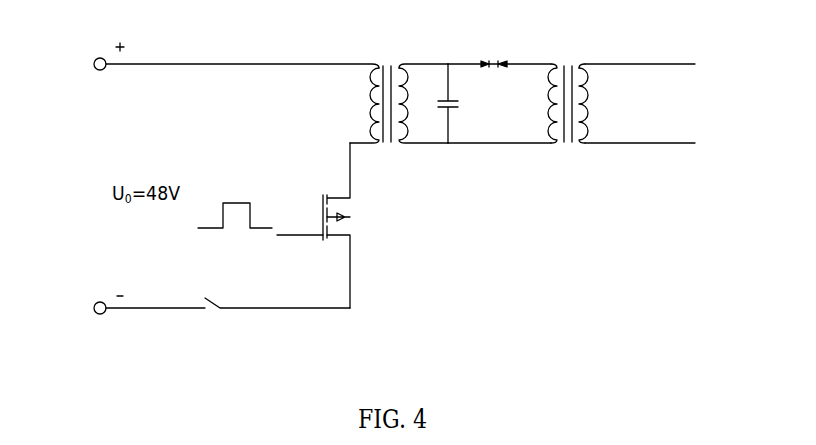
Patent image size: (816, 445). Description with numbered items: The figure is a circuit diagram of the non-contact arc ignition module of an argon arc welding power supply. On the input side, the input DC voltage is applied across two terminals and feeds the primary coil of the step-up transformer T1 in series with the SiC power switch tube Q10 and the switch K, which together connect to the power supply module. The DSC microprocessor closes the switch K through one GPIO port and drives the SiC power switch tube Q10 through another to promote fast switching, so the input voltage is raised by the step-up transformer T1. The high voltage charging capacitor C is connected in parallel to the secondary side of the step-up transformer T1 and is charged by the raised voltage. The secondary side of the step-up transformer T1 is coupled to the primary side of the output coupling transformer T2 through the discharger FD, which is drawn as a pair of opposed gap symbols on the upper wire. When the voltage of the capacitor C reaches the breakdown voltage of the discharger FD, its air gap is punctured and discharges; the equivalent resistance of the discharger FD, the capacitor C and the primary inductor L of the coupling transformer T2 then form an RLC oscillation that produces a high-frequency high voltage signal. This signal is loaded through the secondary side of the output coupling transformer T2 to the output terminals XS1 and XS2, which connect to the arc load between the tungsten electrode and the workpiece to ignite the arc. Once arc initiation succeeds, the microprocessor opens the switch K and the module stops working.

The step-up transformer T1 is at (399, 94).
The output coupling transformer T2 is at (572, 94).
The discharger FD is at (499, 53).
The high voltage charging capacitor C is at (463, 103).
The primary inductor of the coupling transformer L is at (542, 103).
The first output terminal XS1 is at (645, 53).
The second output terminal XS2 is at (643, 158).
The SiC power switch tube Q10 is at (313, 225).
The switch K is at (228, 291).